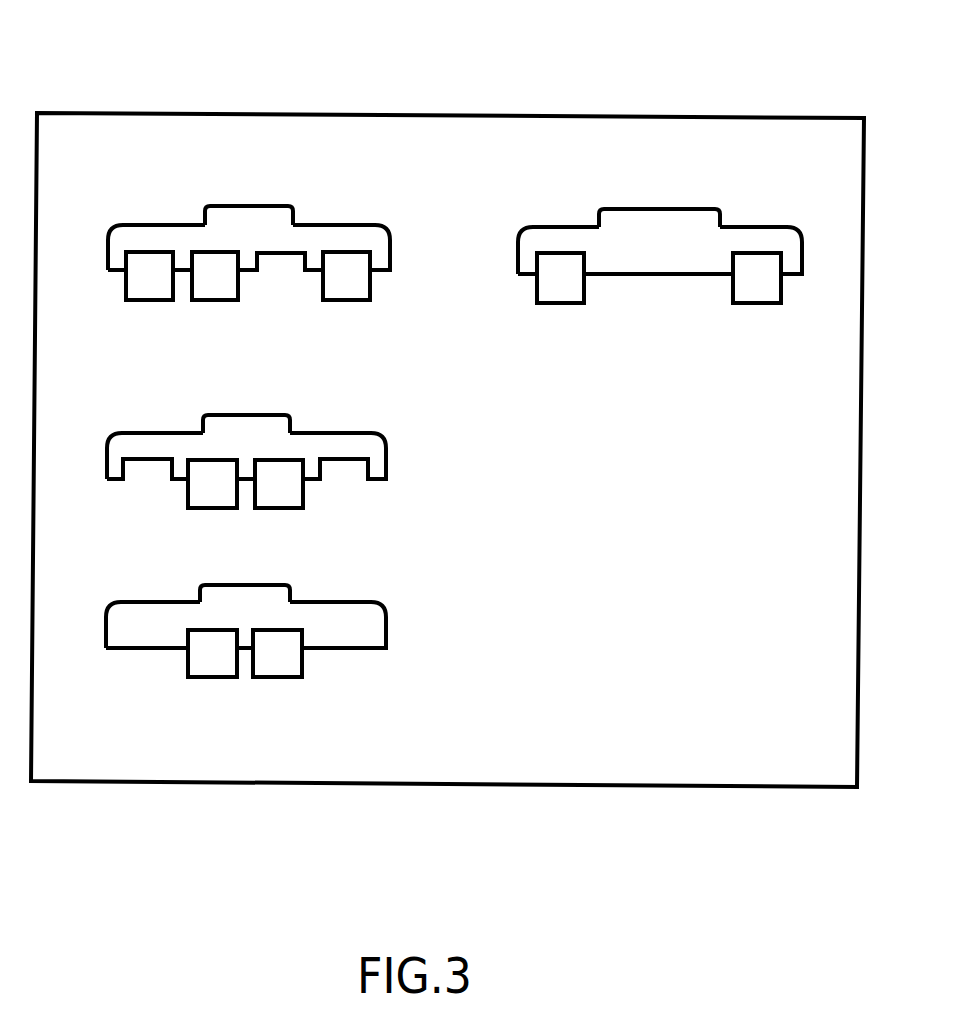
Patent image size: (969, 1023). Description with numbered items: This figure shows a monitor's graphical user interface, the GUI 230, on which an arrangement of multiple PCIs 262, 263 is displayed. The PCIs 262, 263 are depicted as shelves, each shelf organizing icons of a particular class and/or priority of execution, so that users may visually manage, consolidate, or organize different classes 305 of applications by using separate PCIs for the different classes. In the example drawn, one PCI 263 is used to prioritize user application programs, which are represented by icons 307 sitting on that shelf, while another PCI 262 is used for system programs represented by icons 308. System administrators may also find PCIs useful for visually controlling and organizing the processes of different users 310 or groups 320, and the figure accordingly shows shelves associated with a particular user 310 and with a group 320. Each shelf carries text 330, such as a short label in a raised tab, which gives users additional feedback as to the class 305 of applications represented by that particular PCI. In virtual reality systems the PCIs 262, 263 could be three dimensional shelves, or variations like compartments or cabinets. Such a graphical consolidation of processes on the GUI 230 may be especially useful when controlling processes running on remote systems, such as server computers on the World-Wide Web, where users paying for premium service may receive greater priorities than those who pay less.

The GUI 230 is at (400, 113).
The PCI 262 is at (640, 275).
The PCI 263 is at (387, 223).
The class 305 is at (217, 230).
The icon 307 is at (148, 292).
The icon 308 is at (210, 677).
The user 310 is at (263, 422).
The group 320 is at (700, 209).
The text 330 is at (275, 212).